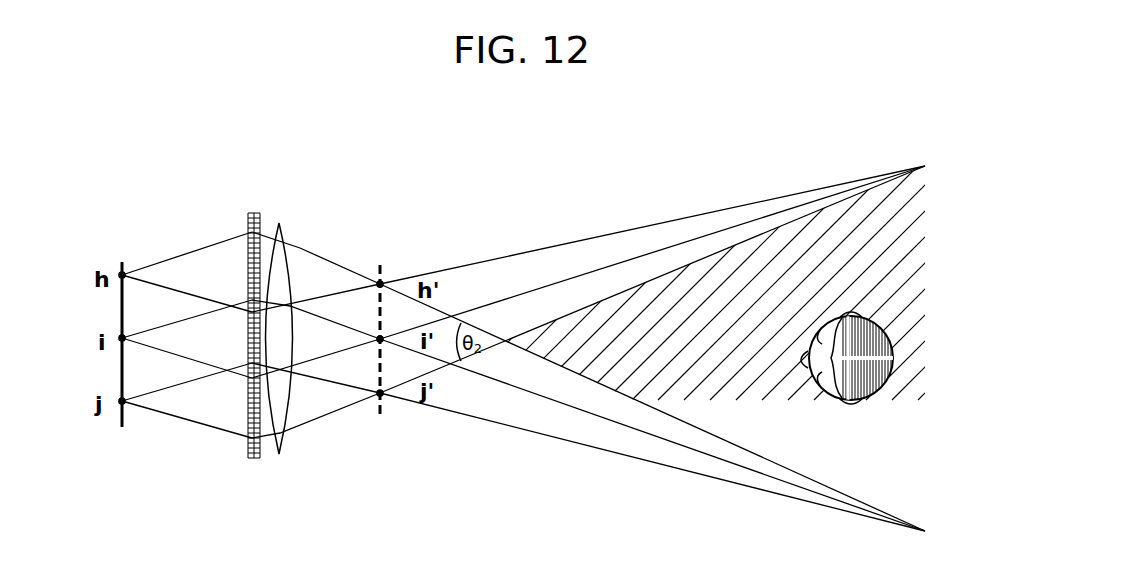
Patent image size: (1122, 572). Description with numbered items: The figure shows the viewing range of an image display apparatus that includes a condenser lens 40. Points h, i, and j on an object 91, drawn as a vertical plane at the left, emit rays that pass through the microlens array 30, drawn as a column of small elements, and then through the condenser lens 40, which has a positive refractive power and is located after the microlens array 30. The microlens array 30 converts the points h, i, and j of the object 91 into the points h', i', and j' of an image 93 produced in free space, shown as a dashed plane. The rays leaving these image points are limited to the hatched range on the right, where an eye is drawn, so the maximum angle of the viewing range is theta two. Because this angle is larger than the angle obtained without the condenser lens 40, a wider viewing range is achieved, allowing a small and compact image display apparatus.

The microlens array 30 is at (253, 198).
The condenser lens 40 is at (286, 206).
The object 91 is at (122, 262).
The image 93 is at (380, 265).